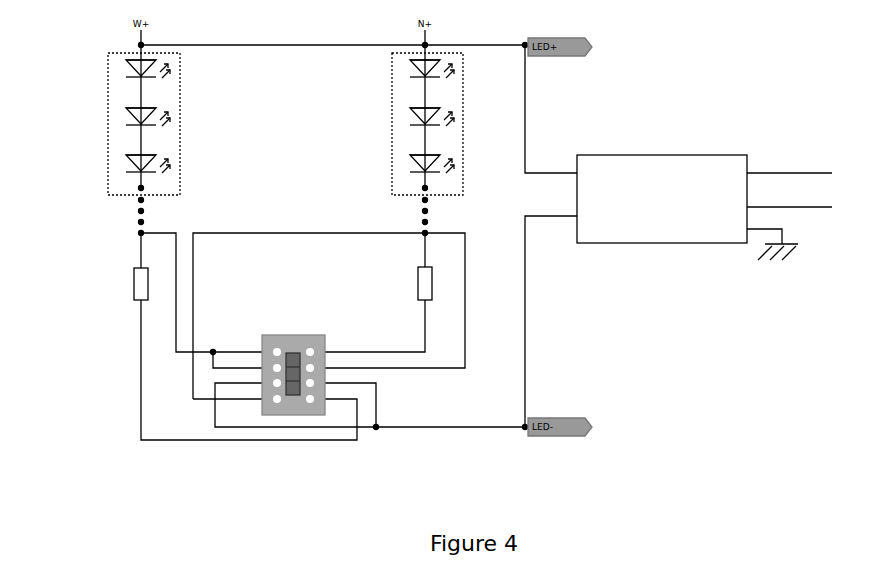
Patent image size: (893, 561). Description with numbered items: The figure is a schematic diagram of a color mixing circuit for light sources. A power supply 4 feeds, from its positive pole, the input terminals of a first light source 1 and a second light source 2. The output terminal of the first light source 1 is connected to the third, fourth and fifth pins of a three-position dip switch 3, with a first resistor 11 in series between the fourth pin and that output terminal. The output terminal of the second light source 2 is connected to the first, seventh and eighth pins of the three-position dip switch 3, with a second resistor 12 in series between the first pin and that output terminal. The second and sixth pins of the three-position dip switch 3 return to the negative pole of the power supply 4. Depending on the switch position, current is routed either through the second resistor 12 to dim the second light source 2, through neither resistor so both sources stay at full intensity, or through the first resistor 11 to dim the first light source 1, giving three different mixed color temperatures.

The first light source 1 is at (392, 88).
The second light source 2 is at (108, 85).
The three-position dip switch 3 is at (276, 335).
The power supply 4 is at (717, 153).
The first resistor 11 is at (418, 290).
The second resistor 12 is at (134, 293).